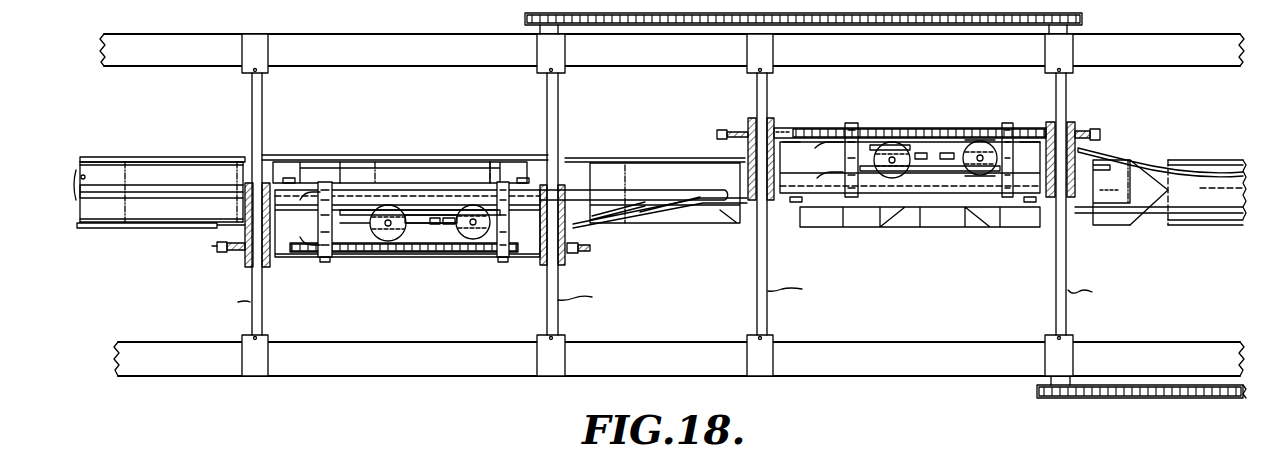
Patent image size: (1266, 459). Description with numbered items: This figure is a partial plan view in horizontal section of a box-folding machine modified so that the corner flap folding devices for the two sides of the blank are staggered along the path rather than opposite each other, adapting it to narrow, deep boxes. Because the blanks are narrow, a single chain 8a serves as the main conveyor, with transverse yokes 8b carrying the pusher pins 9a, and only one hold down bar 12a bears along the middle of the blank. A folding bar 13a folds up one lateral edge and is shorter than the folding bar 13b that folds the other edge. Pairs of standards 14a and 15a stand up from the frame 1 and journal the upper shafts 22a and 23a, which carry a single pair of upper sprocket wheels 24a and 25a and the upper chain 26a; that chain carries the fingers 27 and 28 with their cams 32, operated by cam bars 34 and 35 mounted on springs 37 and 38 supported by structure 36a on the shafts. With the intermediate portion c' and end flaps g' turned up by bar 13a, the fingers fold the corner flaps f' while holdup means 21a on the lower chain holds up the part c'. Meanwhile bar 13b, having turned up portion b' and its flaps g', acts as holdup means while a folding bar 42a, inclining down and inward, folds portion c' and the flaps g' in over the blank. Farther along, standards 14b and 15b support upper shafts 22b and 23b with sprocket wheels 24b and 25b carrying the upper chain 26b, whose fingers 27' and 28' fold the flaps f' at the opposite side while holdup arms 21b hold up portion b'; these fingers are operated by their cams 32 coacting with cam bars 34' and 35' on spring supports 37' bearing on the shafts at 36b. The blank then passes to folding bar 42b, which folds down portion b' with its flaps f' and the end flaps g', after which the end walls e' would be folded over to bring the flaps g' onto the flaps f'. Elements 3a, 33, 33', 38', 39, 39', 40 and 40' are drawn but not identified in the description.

The frame 1 is at (364, 60).
The rail end 3a is at (88, 172).
The chain 8a is at (108, 160).
The transverse yokes 8b is at (84, 177).
The pusher pins 9a is at (84, 206).
The hold down bar 12a is at (152, 190).
The folding bar 13a is at (138, 235).
The folding bar 13b is at (290, 154).
The standards 14a is at (235, 72).
The standards 14b is at (770, 67).
The standards 15a is at (540, 68).
The standards 15b is at (1046, 54).
The holdup means 21a is at (420, 245).
The holdup arms 21b is at (920, 210).
The upper shaft 22a is at (225, 303).
The upper shaft 22b is at (801, 285).
The upper shaft 23a is at (590, 295).
The upper shaft 23b is at (1095, 291).
The upper sprocket wheel 24a is at (214, 247).
The sprocket wheel 24b is at (718, 133).
The upper sprocket wheel 25a is at (580, 253).
The sprocket wheel 25b is at (1098, 131).
The upper chain 26a is at (404, 263).
The upper chain 26b is at (902, 128).
The finger 27 is at (398, 256).
The finger 27' is at (890, 128).
The finger 28 is at (404, 278).
The finger 28' is at (910, 108).
The cams 32 is at (326, 258).
The roller 33 is at (683, 220).
The roller 33' is at (988, 127).
The cam bar 34 is at (420, 189).
The cam bar 34' is at (930, 136).
The cam bar 35 is at (440, 256).
The cam bar 35' is at (933, 200).
The structure 36a is at (248, 184).
The supports 36b is at (750, 121).
The spring 37 is at (406, 152).
The springs 37' is at (916, 120).
The spring 38 is at (410, 283).
The foot 38' is at (913, 219).
The hook 39 is at (324, 163).
The hook 39' is at (812, 151).
The hook 40 is at (296, 263).
The hook 40' is at (813, 169).
The folding bar 42a is at (642, 228).
The folding bar 42b is at (1115, 152).
The intermediate side wall portion b' is at (711, 170).
The intermediate side wall portion c' is at (697, 213).
The end wall e' is at (1110, 194).
The triangular corner flap portion f' is at (909, 202).
The end wall end flap g' is at (615, 194).